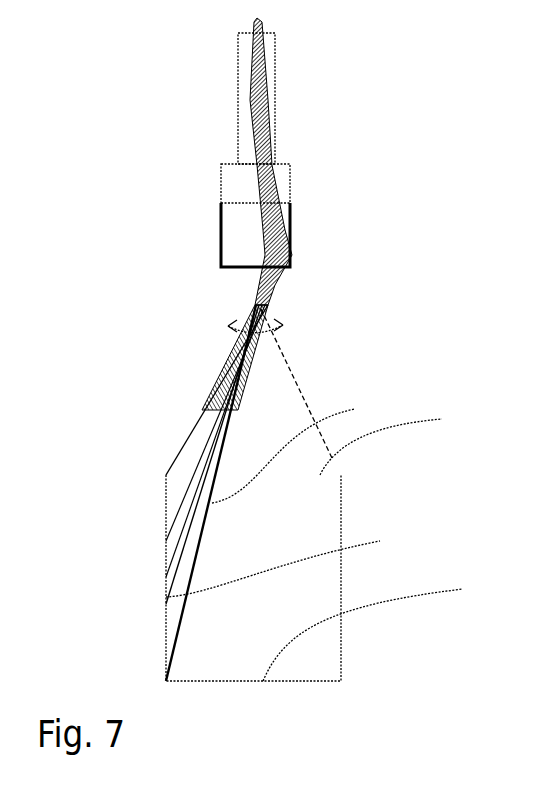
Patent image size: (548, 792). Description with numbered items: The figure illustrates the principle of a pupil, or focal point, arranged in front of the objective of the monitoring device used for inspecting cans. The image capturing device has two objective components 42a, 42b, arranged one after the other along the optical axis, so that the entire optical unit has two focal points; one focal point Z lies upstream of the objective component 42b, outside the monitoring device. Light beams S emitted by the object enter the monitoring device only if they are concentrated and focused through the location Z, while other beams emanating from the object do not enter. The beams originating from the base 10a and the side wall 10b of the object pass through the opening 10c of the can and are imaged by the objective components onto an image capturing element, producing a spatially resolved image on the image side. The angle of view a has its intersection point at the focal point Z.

The objective component 42a is at (277, 103).
The objective component 42b is at (283, 191).
The focal point Z is at (270, 307).
The angle of view a is at (255, 339).
The light beams S is at (294, 451).
The opening 10c is at (400, 443).
The side wall 10b is at (290, 563).
The base 10a is at (383, 632).